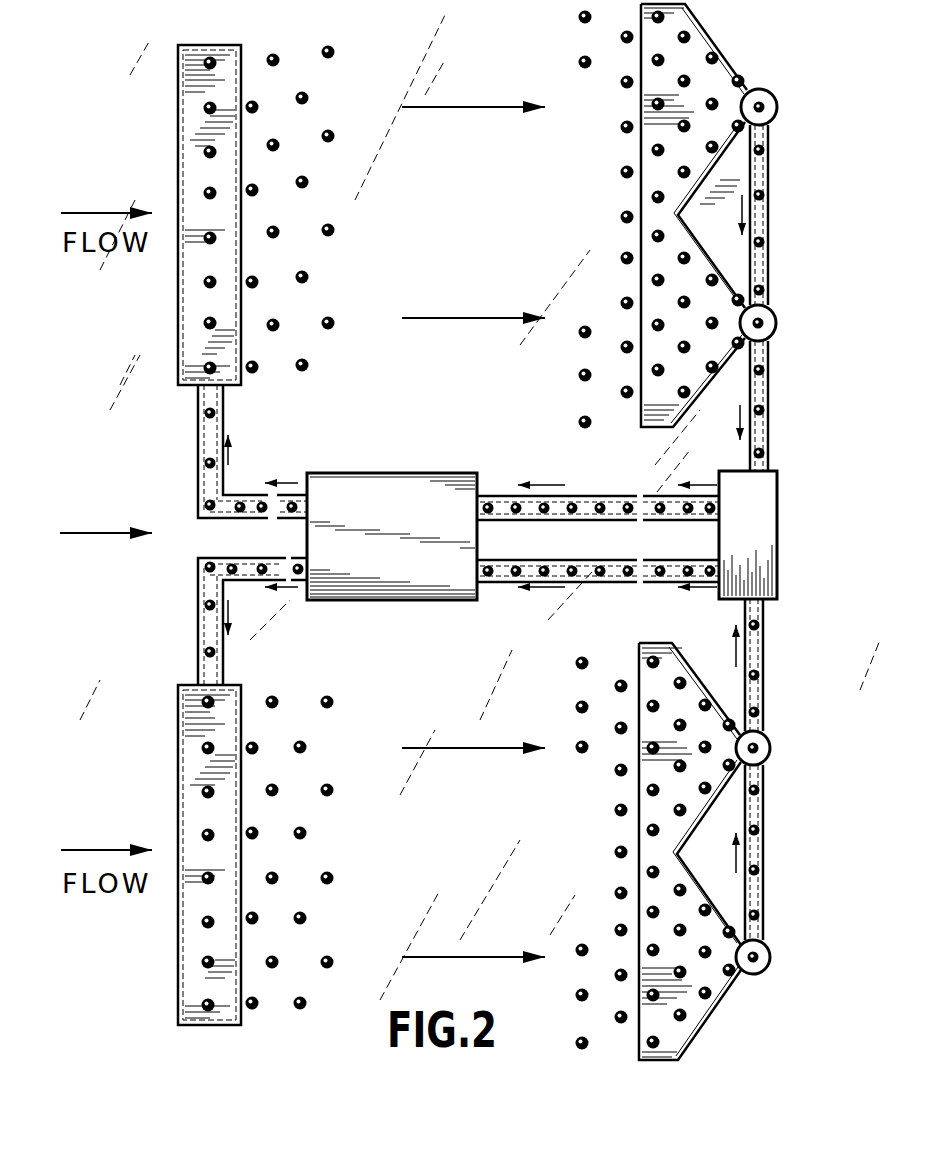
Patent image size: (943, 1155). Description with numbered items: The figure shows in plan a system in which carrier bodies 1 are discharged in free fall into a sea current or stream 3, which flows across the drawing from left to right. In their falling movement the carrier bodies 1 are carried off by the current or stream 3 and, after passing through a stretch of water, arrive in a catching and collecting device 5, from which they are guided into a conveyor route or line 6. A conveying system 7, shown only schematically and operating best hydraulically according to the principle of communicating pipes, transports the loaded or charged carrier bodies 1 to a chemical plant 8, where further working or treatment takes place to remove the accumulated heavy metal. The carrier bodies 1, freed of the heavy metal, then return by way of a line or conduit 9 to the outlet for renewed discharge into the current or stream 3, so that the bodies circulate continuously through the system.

The carrier bodies 1 is at (334, 700).
The sea current or stream 3 is at (442, 748).
The catching and collecting device 5 is at (741, 985).
The conveyor route or line 6 is at (763, 942).
The conveying system 7 is at (748, 535).
The chemical plant 8 is at (392, 536).
The line or conduit 9 is at (220, 540).